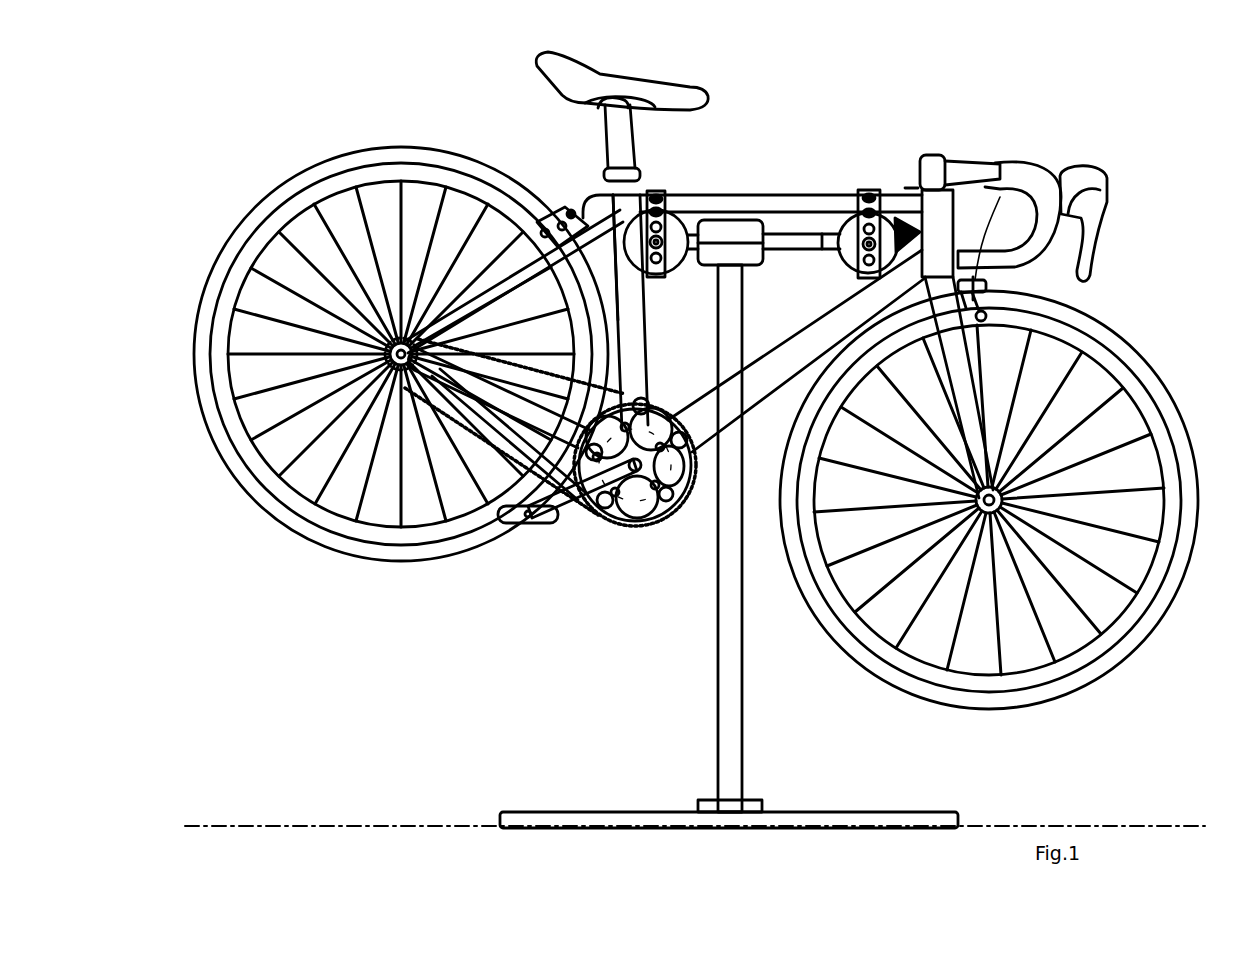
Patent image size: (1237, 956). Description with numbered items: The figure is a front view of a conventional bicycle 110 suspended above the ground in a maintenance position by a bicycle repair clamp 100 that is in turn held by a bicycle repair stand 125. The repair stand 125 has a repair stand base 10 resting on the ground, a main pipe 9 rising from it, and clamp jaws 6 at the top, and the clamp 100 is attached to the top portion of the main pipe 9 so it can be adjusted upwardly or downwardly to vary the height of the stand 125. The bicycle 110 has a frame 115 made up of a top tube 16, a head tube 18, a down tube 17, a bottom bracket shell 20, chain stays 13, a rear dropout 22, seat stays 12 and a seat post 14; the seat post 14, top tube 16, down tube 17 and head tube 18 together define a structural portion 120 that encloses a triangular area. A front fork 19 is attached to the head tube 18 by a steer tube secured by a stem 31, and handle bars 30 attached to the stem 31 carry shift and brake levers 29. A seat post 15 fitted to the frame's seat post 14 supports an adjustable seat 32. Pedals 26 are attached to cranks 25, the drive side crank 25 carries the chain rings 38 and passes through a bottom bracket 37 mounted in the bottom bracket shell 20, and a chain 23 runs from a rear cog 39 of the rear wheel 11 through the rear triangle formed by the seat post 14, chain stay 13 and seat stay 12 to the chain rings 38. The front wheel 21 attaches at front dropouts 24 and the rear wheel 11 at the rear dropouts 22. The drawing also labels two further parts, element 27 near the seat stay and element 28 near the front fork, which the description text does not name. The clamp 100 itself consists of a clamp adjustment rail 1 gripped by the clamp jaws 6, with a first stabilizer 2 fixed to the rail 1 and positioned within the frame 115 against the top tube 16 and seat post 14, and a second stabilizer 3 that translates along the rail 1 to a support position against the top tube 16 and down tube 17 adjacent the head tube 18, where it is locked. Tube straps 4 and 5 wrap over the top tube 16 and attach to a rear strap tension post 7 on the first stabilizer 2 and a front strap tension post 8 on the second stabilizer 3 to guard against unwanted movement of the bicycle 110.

The clamp adjustment rail 1 is at (822, 238).
The first stabilizer 2 is at (685, 207).
The second stabilizer 3 is at (870, 203).
The tube strap 4 is at (668, 194).
The tube strap 5 is at (873, 208).
The clamp jaws 6 is at (742, 238).
The rear strap tension post 7 is at (664, 255).
The front strap tension post 8 is at (862, 247).
The main pipe 9 is at (735, 524).
The repair stand base 10 is at (776, 820).
The rear wheel 11 is at (398, 359).
The seat stays 12 is at (592, 230).
The chain stays 13 is at (513, 410).
The seat post 14 is at (634, 362).
The seat post 15 is at (625, 148).
The top tube 16 is at (770, 208).
The down tube 17 is at (780, 372).
The head tube 18 is at (934, 232).
The front fork 19 is at (956, 348).
The bottom bracket shell 20 is at (638, 490).
The front wheel 21 is at (1002, 500).
The rear dropout 22 is at (388, 346).
The chain 23 is at (603, 482).
The front dropouts 24 is at (996, 490).
The crank 25 is at (598, 478).
The pedals 26 is at (545, 522).
The seat stay 27 is at (545, 213).
The front brake 28 is at (988, 297).
The shift and brake levers 29 is at (1082, 192).
The handle bars 30 is at (1015, 186).
The stem 31 is at (954, 172).
The seat 32 is at (630, 82).
The bottom bracket 37 is at (635, 499).
The chain rings 38 is at (637, 522).
The rear cog 39 is at (400, 372).
The bicycle repair clamp 100 is at (729, 440).
The bicycle 110 is at (905, 188).
The frame 115 is at (632, 314).
The structural portion 120 is at (764, 274).
The bicycle repair stand 125 is at (729, 546).